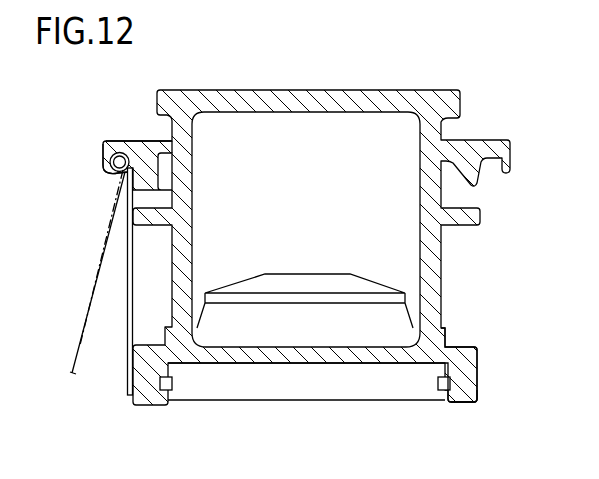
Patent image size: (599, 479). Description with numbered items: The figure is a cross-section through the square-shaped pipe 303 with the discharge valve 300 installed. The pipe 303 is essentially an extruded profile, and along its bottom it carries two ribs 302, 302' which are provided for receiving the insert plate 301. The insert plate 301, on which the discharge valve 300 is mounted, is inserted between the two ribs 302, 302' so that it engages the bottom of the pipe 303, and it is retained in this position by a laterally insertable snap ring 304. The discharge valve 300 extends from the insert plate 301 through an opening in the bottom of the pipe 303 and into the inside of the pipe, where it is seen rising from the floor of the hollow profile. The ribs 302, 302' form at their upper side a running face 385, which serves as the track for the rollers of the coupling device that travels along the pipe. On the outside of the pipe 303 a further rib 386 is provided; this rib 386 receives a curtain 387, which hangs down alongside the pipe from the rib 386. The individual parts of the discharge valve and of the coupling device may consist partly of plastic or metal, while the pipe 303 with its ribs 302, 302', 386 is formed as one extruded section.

The discharge valve 300 is at (395, 322).
The insert plate 301 is at (213, 382).
The rib 302 is at (492, 376).
The rib 302' is at (482, 418).
The square-shaped pipe 303 is at (393, 130).
The snap ring 304 is at (440, 389).
The running face 385 is at (457, 342).
The further rib 386 is at (145, 152).
The curtain 387 is at (128, 282).